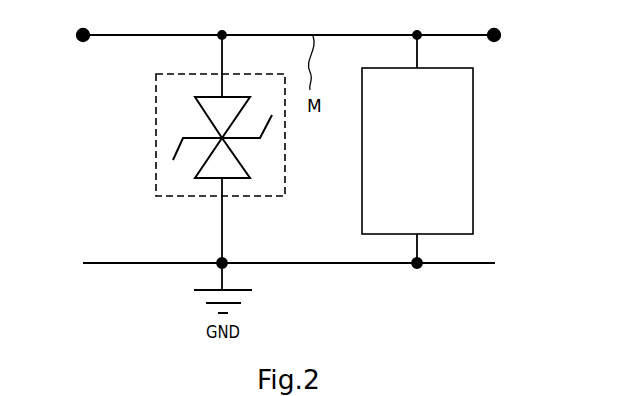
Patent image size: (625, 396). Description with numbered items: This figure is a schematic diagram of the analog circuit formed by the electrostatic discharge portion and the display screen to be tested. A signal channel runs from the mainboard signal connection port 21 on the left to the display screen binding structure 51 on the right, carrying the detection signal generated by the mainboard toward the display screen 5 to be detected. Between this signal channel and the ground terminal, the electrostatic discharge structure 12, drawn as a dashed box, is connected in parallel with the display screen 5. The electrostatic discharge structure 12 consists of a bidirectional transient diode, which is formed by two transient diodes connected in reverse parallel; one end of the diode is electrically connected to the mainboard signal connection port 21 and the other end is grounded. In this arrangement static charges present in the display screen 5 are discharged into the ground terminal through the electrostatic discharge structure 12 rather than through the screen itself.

The mainboard signal connection port 21 is at (68, 35).
The display screen binding structure 51 is at (510, 36).
The electrostatic discharge structure 12 is at (156, 97).
The display screen to be detected 5 is at (417, 151).